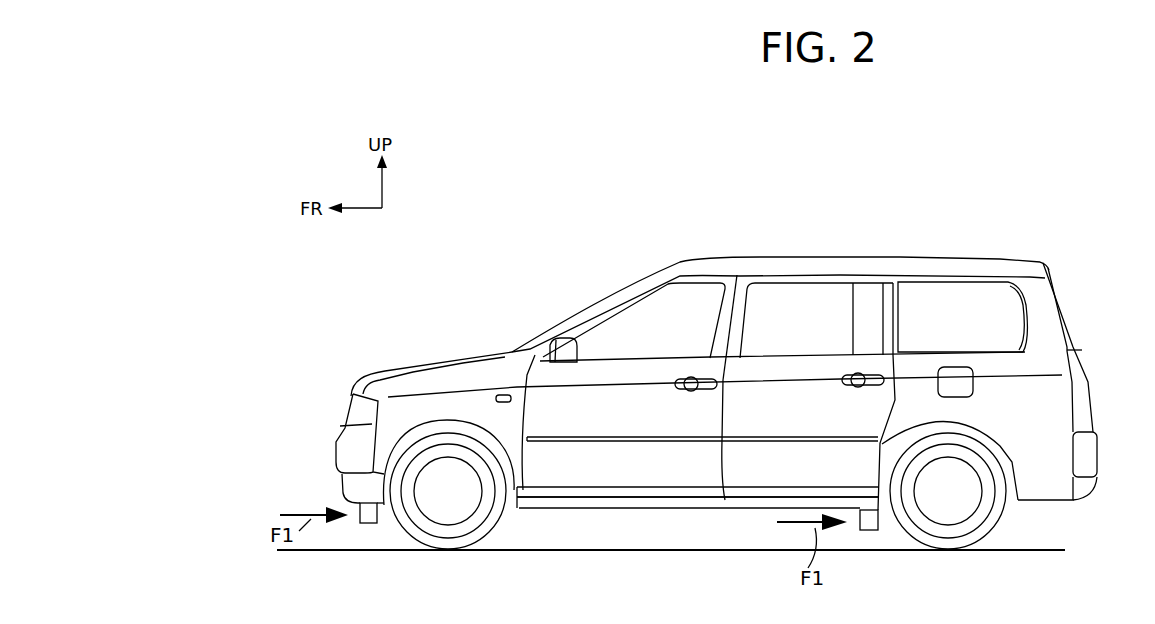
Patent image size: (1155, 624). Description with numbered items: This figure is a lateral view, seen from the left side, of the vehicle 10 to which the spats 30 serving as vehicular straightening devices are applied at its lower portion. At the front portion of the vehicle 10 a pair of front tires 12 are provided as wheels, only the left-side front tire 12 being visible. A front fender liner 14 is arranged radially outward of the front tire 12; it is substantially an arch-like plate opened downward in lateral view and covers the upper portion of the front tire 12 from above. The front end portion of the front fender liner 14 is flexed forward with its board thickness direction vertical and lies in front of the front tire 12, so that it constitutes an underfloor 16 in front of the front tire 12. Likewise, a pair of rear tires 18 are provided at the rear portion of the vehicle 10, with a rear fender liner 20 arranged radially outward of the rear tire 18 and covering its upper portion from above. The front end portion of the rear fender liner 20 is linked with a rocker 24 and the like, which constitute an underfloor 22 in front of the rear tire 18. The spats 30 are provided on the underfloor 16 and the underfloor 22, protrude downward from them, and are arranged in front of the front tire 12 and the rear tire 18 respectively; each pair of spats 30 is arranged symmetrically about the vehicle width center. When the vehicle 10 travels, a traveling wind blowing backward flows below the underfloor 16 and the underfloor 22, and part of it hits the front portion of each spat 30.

The vehicle 10 is at (716, 383).
The front tire 12 is at (493, 532).
The front fender liner 14 is at (428, 432).
The underfloor 16 is at (358, 506).
The rear tire 18 is at (991, 540).
The rear fender liner 20 is at (997, 446).
The underfloor 22 is at (855, 497).
The rocker 24 is at (751, 510).
The spat 30 is at (356, 528).